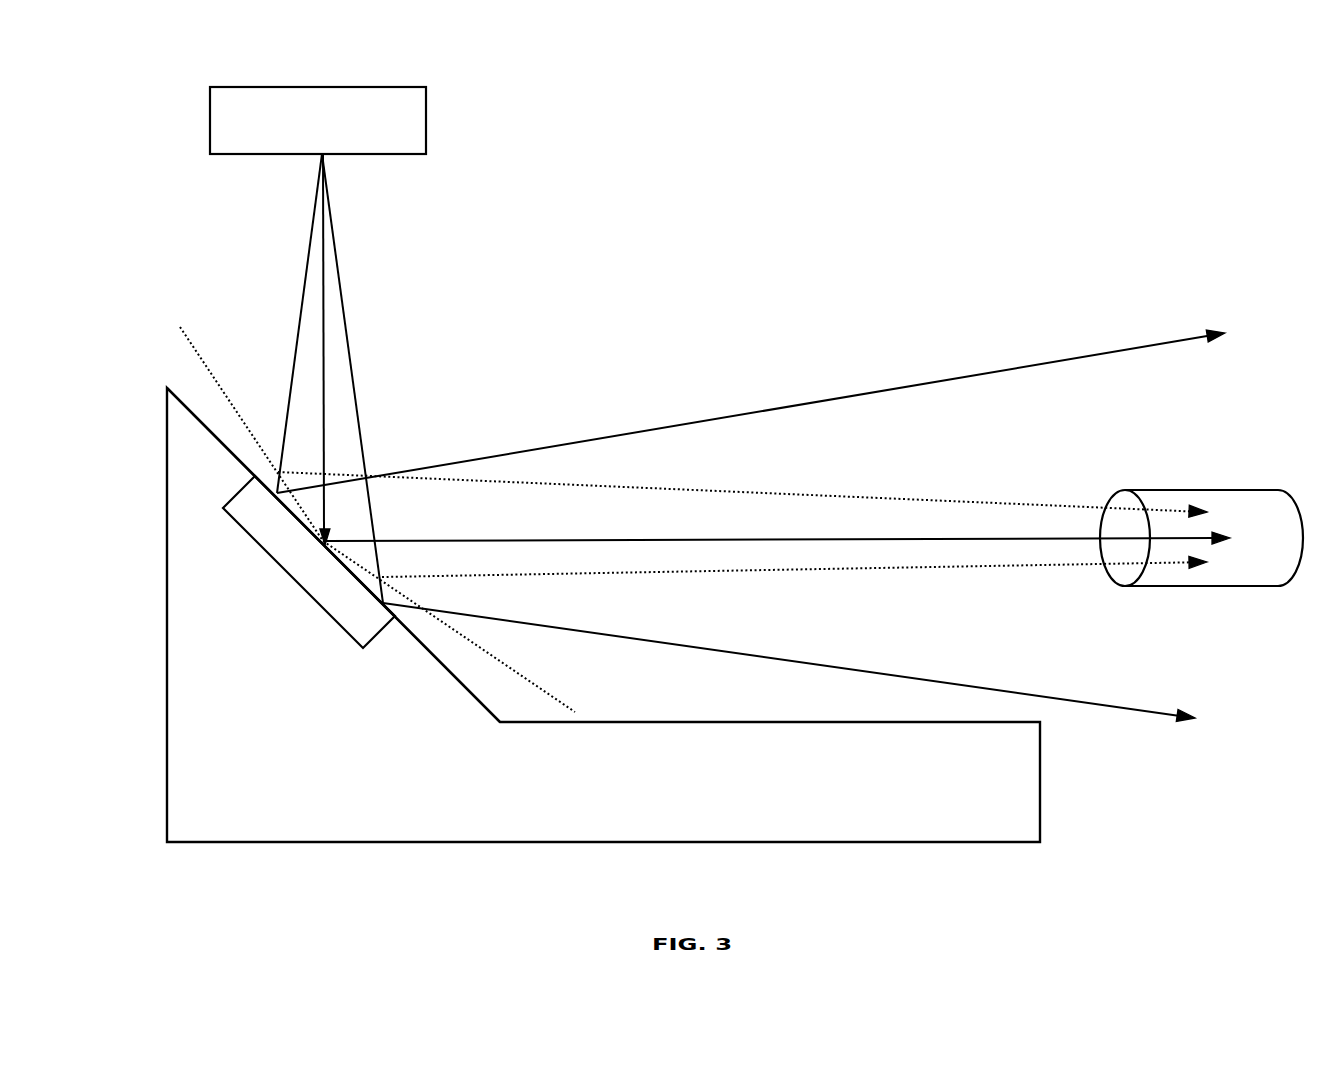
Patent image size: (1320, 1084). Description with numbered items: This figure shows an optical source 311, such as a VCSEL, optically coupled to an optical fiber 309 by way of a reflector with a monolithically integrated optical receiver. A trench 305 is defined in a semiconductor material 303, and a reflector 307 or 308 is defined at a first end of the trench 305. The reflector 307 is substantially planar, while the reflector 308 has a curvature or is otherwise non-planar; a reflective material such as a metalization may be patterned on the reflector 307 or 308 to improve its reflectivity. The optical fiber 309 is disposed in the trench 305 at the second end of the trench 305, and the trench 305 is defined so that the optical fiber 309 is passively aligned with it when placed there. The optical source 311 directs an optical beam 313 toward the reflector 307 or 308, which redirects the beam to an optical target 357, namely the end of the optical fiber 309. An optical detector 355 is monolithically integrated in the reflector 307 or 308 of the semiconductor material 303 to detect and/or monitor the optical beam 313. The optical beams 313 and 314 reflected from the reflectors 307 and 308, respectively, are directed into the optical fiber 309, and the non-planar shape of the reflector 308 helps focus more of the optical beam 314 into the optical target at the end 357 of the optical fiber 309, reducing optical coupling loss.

The semiconductor material 303 is at (1040, 762).
The trench 305 is at (905, 356).
The reflector 307 is at (234, 452).
The reflector 308 is at (195, 350).
The optical fiber 309 is at (1213, 489).
The optical source 311 is at (426, 123).
The optical beam 313 is at (325, 352).
The optical beam 314 is at (867, 498).
The optical detector 355 is at (327, 608).
The optical target 357 is at (1126, 572).